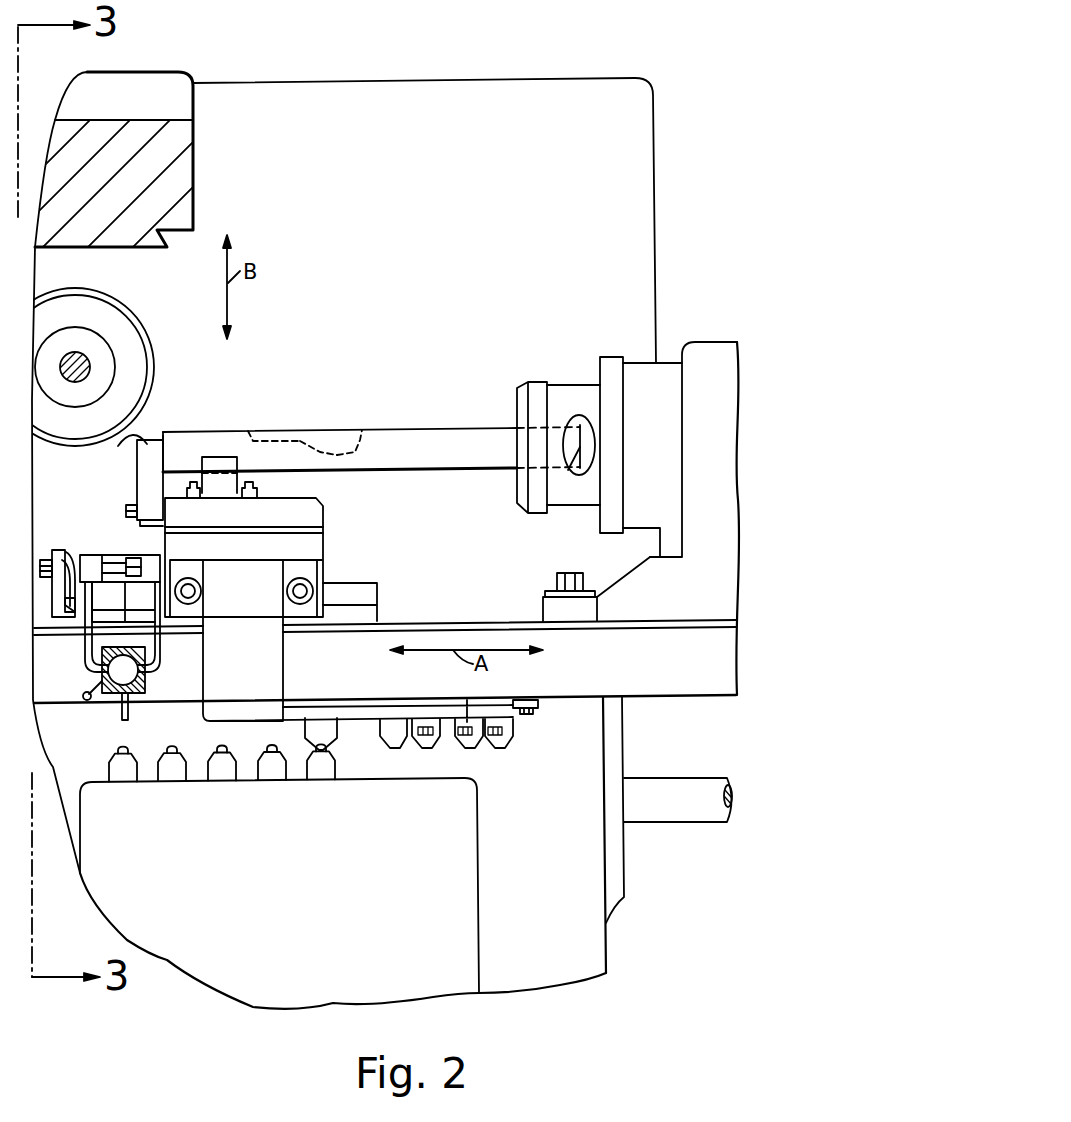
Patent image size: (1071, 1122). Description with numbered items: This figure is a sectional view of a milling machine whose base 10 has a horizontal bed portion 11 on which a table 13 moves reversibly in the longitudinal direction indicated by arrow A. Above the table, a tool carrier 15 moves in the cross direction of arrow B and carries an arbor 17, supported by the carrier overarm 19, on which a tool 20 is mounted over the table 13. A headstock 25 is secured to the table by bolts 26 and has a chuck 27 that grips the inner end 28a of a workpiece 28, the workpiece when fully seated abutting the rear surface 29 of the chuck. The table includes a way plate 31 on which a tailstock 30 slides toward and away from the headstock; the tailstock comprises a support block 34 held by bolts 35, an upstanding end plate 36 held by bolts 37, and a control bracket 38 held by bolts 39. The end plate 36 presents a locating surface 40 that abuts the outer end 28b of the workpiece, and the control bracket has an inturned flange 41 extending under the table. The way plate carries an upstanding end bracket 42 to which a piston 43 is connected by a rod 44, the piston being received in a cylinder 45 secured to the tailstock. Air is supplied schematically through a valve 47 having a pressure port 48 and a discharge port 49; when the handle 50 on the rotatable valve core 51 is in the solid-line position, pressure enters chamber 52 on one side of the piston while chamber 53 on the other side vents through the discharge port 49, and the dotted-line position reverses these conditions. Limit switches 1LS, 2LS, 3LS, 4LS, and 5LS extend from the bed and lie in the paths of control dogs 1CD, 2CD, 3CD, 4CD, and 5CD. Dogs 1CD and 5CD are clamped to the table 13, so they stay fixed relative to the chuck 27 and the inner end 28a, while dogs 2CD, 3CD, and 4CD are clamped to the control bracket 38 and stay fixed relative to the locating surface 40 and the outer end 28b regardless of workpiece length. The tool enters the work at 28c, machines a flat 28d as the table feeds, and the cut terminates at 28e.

The base 10 is at (612, 937).
The bed portion 11 is at (623, 731).
The table 13 is at (407, 622).
The tool carrier 15 is at (393, 284).
The arbor 17 is at (88, 360).
The carrier overarm 19 is at (197, 170).
The tool 20 is at (80, 326).
The headstock 25 is at (702, 342).
The bolts 26 is at (557, 575).
The chuck 27 is at (572, 383).
The workpiece 28 is at (443, 428).
The inner end of workpiece 28a is at (582, 438).
The outer end of workpiece 28b is at (163, 460).
The tool entry point 28c is at (250, 430).
The flat 28d is at (330, 454).
The cut termination point 28e is at (358, 436).
The rear surface of chuck 29 is at (570, 468).
The tailstock 30 is at (328, 537).
The way plate 31 is at (370, 582).
The support block 34 is at (220, 457).
The bolts 35 is at (253, 485).
The end plate 36 is at (122, 447).
The bolts 37 is at (128, 508).
The control bracket 38 is at (222, 558).
The bolts 39 is at (307, 587).
The locating surface 40 is at (165, 452).
The inturned flange 41 is at (205, 720).
The end bracket 42 is at (55, 550).
The piston 43 is at (128, 557).
The rod 44 is at (72, 561).
The cylinder 45 is at (148, 559).
The valve 47 is at (147, 671).
The pressure port 48 is at (122, 713).
The discharge port 49 is at (133, 640).
The handle 50 is at (100, 684).
The valve core 51 is at (100, 653).
The chamber 52 is at (112, 575).
The chamber 53 is at (145, 575).
The limit switch 1LS is at (322, 775).
The limit switch 2LS is at (273, 776).
The limit switch 3LS is at (223, 777).
The limit switch 4LS is at (173, 777).
The limit switch 5LS is at (124, 778).
The control dog 1CD is at (330, 750).
The control dog 2CD is at (433, 747).
The control dog 3CD is at (393, 748).
The control dog 4CD is at (477, 748).
The control dog 5CD is at (513, 730).